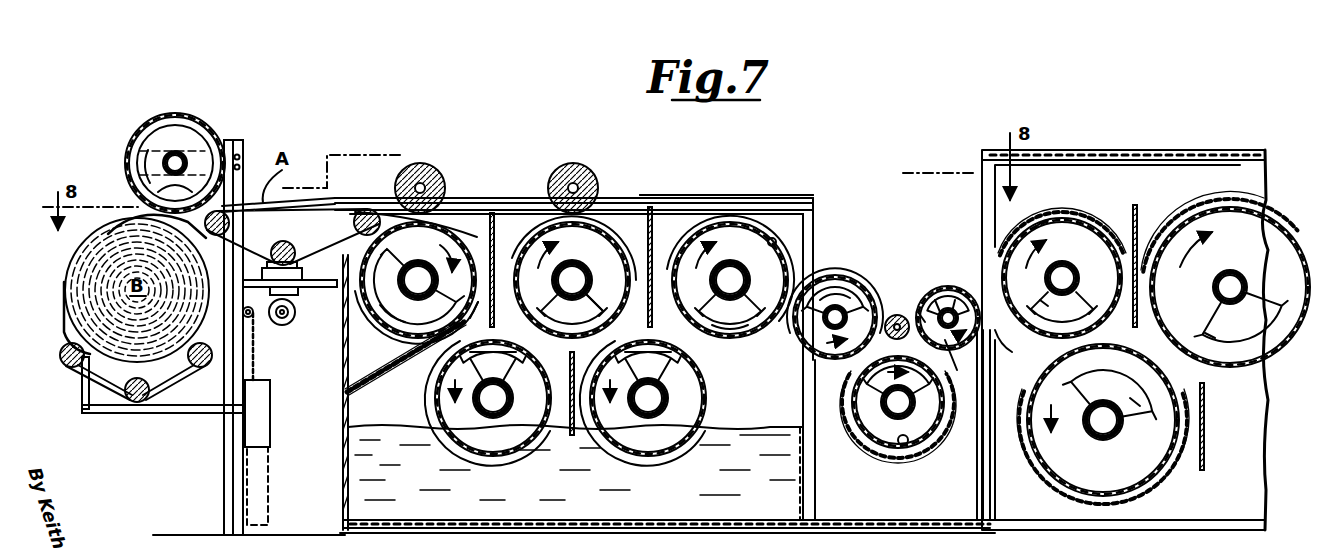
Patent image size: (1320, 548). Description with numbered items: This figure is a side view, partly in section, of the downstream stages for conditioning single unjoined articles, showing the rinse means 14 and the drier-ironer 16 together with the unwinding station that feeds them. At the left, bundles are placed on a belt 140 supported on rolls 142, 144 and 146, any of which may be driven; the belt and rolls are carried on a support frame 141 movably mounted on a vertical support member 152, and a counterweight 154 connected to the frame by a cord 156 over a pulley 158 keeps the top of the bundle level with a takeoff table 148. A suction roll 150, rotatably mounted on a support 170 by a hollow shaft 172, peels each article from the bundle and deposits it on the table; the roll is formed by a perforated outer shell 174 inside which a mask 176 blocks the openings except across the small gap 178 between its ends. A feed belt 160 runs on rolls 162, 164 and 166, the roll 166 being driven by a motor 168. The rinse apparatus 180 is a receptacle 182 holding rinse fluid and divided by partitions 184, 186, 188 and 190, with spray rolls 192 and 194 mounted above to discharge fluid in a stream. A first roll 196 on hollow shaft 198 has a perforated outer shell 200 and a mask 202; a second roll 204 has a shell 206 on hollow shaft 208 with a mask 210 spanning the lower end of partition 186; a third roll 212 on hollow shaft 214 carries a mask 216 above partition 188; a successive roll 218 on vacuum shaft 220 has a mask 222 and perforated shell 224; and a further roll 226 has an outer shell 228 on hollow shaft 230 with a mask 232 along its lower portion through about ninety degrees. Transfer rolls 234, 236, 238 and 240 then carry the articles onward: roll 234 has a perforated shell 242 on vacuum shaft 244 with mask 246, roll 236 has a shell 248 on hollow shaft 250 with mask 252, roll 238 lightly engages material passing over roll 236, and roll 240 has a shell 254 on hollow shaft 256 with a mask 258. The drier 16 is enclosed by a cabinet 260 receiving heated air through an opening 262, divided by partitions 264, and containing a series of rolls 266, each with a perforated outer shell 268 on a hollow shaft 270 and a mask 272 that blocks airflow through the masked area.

The rinse means 14 is at (747, 158).
The drier-ironer 16 is at (1088, 124).
The belt 140 is at (80, 378).
The support frame 141 is at (86, 414).
The roll 142 is at (70, 343).
The roll 144 is at (137, 396).
The roll 146 is at (198, 360).
The takeoff table 148 is at (118, 243).
The suction roll 150 is at (215, 115).
The vertical support member 152 is at (232, 460).
The counterweight 154 is at (270, 415).
The cord 156 is at (256, 368).
The pulley 158 is at (251, 317).
The feed belt 160 is at (305, 222).
The roll 162 is at (229, 226).
The roll 164 is at (373, 203).
The roll 166 is at (288, 248).
The motor 168 is at (295, 318).
The support 170 is at (243, 157).
The hollow shaft 172 is at (180, 150).
The outer shell 174 is at (178, 120).
The mask 176 is at (150, 150).
The gap between mask ends 178 is at (178, 189).
The rinse apparatus 180 is at (645, 190).
The receptacle 182 is at (345, 488).
The partition 184 is at (390, 365).
The partition 186 is at (493, 214).
The partition 188 is at (572, 438).
The partition 190 is at (660, 214).
The spray roll 192 is at (430, 165).
The spray roll 194 is at (573, 164).
The first roll 196 is at (400, 342).
The hollow shaft 198 is at (412, 262).
The perforated outer shell 200 is at (386, 328).
The mask 202 is at (396, 308).
The second roll 204 is at (440, 452).
The perforated outer shell 206 is at (507, 463).
The hollow shaft 208 is at (488, 418).
The mask 210 is at (502, 383).
The third roll 212 is at (612, 216).
The hollow shaft 214 is at (572, 262).
The mask 216 is at (590, 295).
The successive roll 218 is at (648, 467).
The hollow shaft 220 is at (645, 419).
The mask 222 is at (664, 384).
The perforated shell 224 is at (690, 452).
The roll 226 is at (770, 214).
The outer shell 228 is at (778, 240).
The hollow shaft 230 is at (730, 262).
The mask 232 is at (740, 336).
The roll 234 is at (848, 262).
The roll 236 is at (877, 460).
The roll 238 is at (896, 313).
The roll 240 is at (930, 300).
The perforated outer shell 242 is at (860, 290).
The hollow shaft 244 is at (805, 362).
The mask 246 is at (836, 300).
The perforated outer shell 248 is at (936, 448).
The hollow shaft 250 is at (880, 412).
The mask 252 is at (904, 446).
The perforated outer shell 254 is at (958, 370).
The hollow shaft 256 is at (955, 305).
The mask 258 is at (946, 300).
The cabinet 260 is at (1170, 150).
The opening 262 is at (1000, 332).
The partition 264 is at (1138, 225).
The rolls 266 is at (1086, 218).
The perforated outer shell 268 is at (1040, 226).
The shaft 270 is at (1052, 272).
The mask 272 is at (1075, 286).